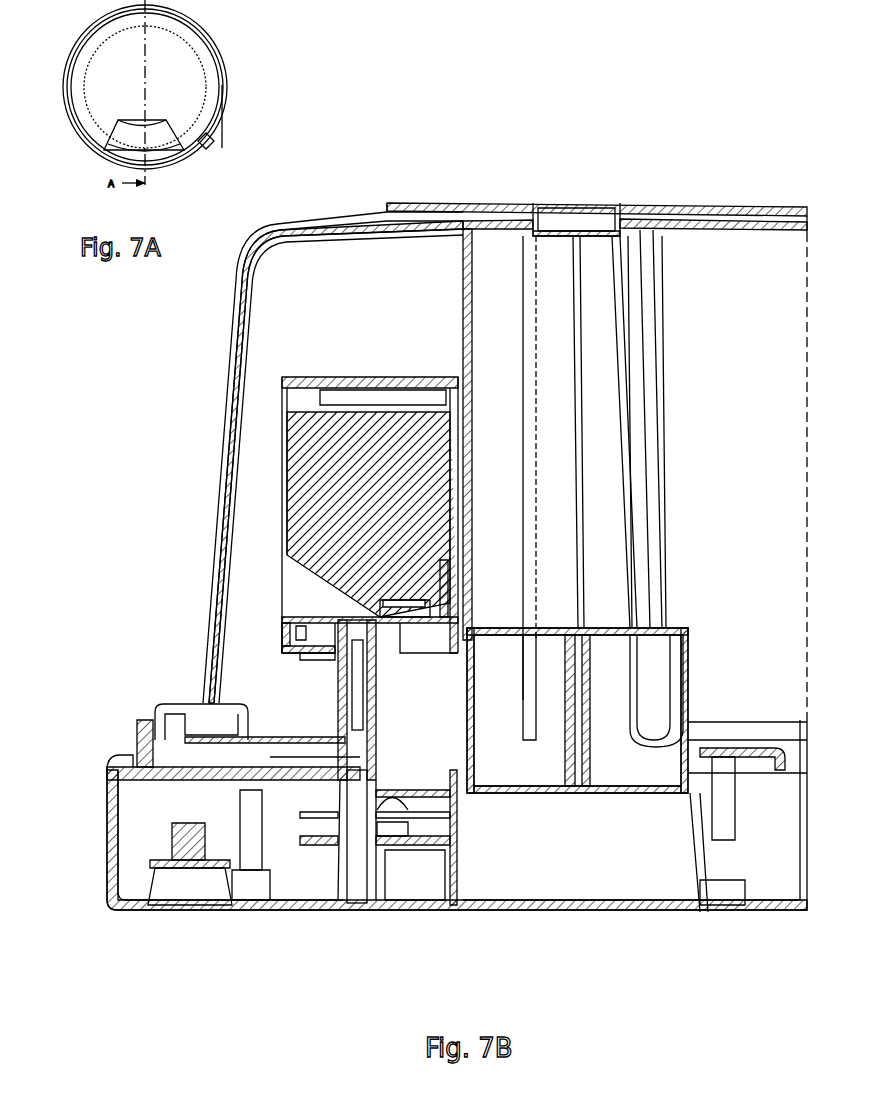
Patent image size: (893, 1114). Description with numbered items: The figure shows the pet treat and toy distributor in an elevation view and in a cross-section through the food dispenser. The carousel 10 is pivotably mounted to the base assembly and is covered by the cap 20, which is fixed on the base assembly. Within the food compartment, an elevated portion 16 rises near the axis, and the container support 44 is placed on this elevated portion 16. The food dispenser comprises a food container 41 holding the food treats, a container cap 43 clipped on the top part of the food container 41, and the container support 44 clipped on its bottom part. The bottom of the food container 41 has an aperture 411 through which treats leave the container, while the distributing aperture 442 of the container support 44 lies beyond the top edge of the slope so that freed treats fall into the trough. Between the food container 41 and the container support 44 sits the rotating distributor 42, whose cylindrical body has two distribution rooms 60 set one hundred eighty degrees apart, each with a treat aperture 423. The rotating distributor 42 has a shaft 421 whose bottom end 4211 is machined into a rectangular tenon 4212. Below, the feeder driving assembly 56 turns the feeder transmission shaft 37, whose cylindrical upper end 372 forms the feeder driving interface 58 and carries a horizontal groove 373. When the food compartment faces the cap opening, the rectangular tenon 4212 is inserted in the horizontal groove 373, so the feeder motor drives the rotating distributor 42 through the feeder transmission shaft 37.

The carousel 10 is at (462, 330).
The elevated portion 16 is at (427, 665).
The cap 20 is at (497, 202).
The feeder transmission shaft 37 is at (345, 780).
The food container 41 is at (325, 513).
The rotating distributor 42 is at (358, 623).
The container cap 43 is at (365, 378).
The container support 44 is at (290, 640).
The feeder driving assembly 56 is at (362, 940).
The feeder driving interface 58 is at (315, 737).
The distribution rooms 60 is at (296, 631).
The upper end 372 is at (360, 755).
The horizontal groove 373 is at (355, 746).
The aperture 411 is at (400, 610).
The shaft 421 is at (372, 700).
The treat apertures 423 is at (330, 618).
The distributing aperture 442 is at (310, 665).
The bottom end 4211 is at (375, 735).
The rectangular tenon 4212 is at (380, 745).